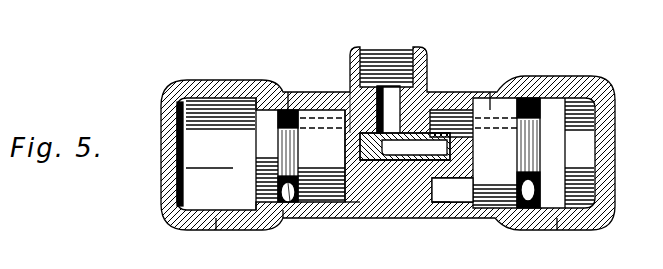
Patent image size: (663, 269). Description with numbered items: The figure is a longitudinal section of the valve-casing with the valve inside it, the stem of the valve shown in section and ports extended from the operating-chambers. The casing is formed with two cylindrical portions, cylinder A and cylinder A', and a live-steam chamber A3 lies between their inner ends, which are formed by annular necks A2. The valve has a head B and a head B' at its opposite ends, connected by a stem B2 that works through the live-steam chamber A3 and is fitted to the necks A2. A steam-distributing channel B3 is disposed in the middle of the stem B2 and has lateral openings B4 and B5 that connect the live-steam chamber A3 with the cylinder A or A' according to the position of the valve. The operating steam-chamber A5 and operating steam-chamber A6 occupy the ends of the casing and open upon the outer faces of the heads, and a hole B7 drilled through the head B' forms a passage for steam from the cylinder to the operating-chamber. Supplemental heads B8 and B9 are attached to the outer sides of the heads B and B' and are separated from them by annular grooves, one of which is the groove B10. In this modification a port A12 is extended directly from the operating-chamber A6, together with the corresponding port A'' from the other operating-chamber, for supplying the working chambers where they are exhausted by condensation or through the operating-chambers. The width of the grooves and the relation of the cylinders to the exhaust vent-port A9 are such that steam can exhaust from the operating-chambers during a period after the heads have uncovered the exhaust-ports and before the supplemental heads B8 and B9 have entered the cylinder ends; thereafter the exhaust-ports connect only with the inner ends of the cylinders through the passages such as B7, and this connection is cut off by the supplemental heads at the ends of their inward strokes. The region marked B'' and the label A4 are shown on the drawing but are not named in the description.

The threaded boss bore A4 is at (393, 100).
The lateral opening B5 is at (376, 129).
The lateral opening B4 is at (445, 118).
The exhaust vent-port A9 is at (491, 92).
The supplemental head B9 is at (267, 154).
The head B is at (407, 156).
The packing ring B'' is at (297, 168).
The head B' is at (321, 159).
The hole drilled through head B7 is at (334, 156).
The operating steam-chamber A6 is at (216, 153).
The supplemental head B8 is at (519, 153).
The cylindrical portion A is at (452, 190).
The operating steam-chamber A5 is at (579, 155).
The port A12 is at (216, 230).
The cylindrical portion A' is at (277, 232).
The live-steam chamber A3 is at (365, 204).
The stem B2 is at (393, 168).
The steam-distributing channel B3 is at (418, 185).
The annular neck A2 is at (435, 210).
The annular groove B10 is at (530, 186).
The slot A'' is at (569, 235).